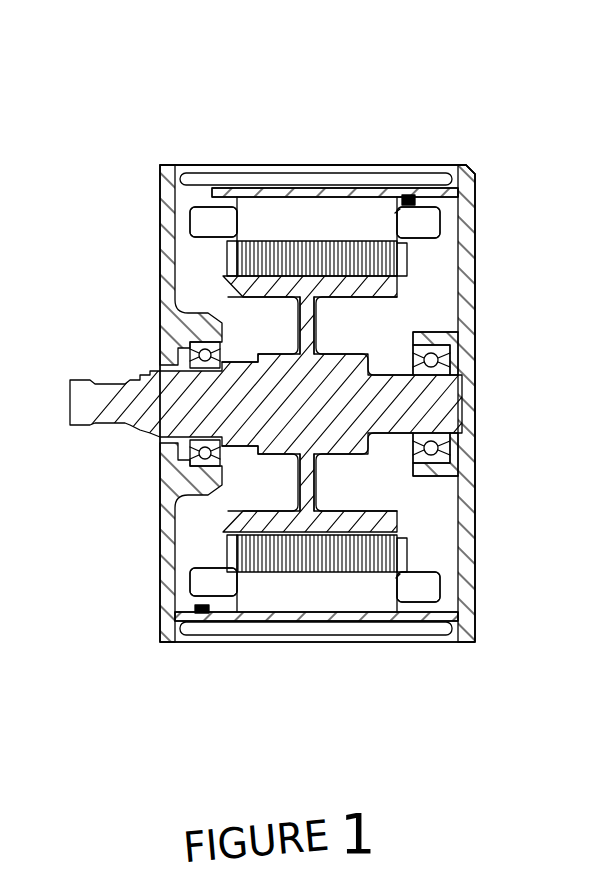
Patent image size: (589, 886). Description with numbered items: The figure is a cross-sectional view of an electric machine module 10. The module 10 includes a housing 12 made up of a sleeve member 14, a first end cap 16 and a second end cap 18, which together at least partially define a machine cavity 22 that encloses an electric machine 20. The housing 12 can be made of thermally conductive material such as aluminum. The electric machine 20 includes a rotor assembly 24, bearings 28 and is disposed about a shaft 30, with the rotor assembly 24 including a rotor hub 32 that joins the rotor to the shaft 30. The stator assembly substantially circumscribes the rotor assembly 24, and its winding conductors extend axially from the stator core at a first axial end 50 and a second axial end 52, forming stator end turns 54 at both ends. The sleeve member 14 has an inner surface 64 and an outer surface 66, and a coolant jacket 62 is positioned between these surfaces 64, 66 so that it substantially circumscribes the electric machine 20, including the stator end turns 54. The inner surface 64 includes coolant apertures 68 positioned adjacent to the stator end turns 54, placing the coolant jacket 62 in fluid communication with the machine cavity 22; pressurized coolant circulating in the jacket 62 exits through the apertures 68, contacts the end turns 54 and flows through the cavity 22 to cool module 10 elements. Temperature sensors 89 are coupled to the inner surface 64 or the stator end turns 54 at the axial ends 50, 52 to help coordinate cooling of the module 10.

The electric machine module 10 is at (494, 110).
The housing 12 is at (476, 170).
The sleeve member 14 is at (384, 168).
The first end cap 16 is at (478, 213).
The second end cap 18 is at (161, 198).
The electric machine 20 is at (213, 271).
The machine cavity 22 is at (176, 258).
The rotor assembly 24 is at (387, 262).
The bearings 28 is at (218, 357).
The shaft 30 is at (93, 415).
The rotor hub 32 is at (308, 324).
The first axial end 50 is at (237, 230).
The second axial end 52 is at (395, 213).
The stator end turns 54 is at (210, 205).
The coolant jacket 62 is at (330, 182).
The inner surface 64 is at (232, 195).
The outer surface 66 is at (300, 170).
The coolant apertures 68 is at (223, 198).
The temperature sensors 89 is at (408, 195).